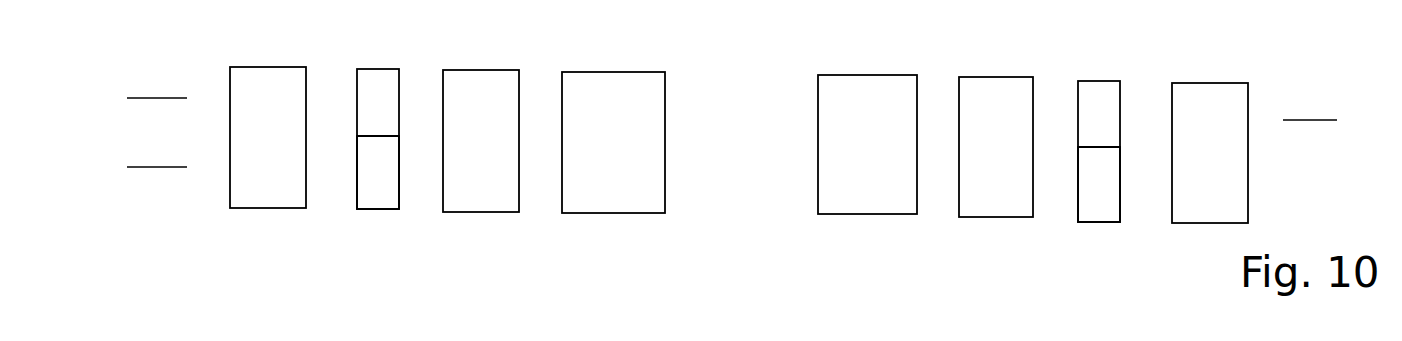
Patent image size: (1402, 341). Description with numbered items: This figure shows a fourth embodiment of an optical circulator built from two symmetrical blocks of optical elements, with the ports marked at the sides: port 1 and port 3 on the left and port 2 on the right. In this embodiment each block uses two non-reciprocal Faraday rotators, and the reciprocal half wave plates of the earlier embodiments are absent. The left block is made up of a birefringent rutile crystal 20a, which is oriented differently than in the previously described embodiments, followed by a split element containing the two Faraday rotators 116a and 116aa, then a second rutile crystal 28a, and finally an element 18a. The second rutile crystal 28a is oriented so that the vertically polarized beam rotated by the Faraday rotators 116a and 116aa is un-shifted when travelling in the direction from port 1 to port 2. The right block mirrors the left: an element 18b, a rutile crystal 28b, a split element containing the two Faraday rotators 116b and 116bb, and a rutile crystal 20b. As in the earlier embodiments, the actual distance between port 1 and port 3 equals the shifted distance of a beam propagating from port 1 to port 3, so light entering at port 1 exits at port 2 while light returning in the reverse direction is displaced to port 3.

The port 1 is at (157, 82).
The port 2 is at (1321, 109).
The port 3 is at (157, 150).
The birefringent rutile crystal 20a is at (248, 78).
The Faraday rotator 116a is at (368, 75).
The Faraday rotator 116aa is at (372, 200).
The second rutile crystal 28a is at (463, 82).
The first outer lens 18a is at (585, 80).
The second outer lens 18b is at (835, 85).
The second intermediate lens 28b is at (970, 92).
The second split lens 116b is at (1090, 90).
The second split lens lower portion 116bb is at (1090, 213).
The second lens element 20b is at (1205, 98).